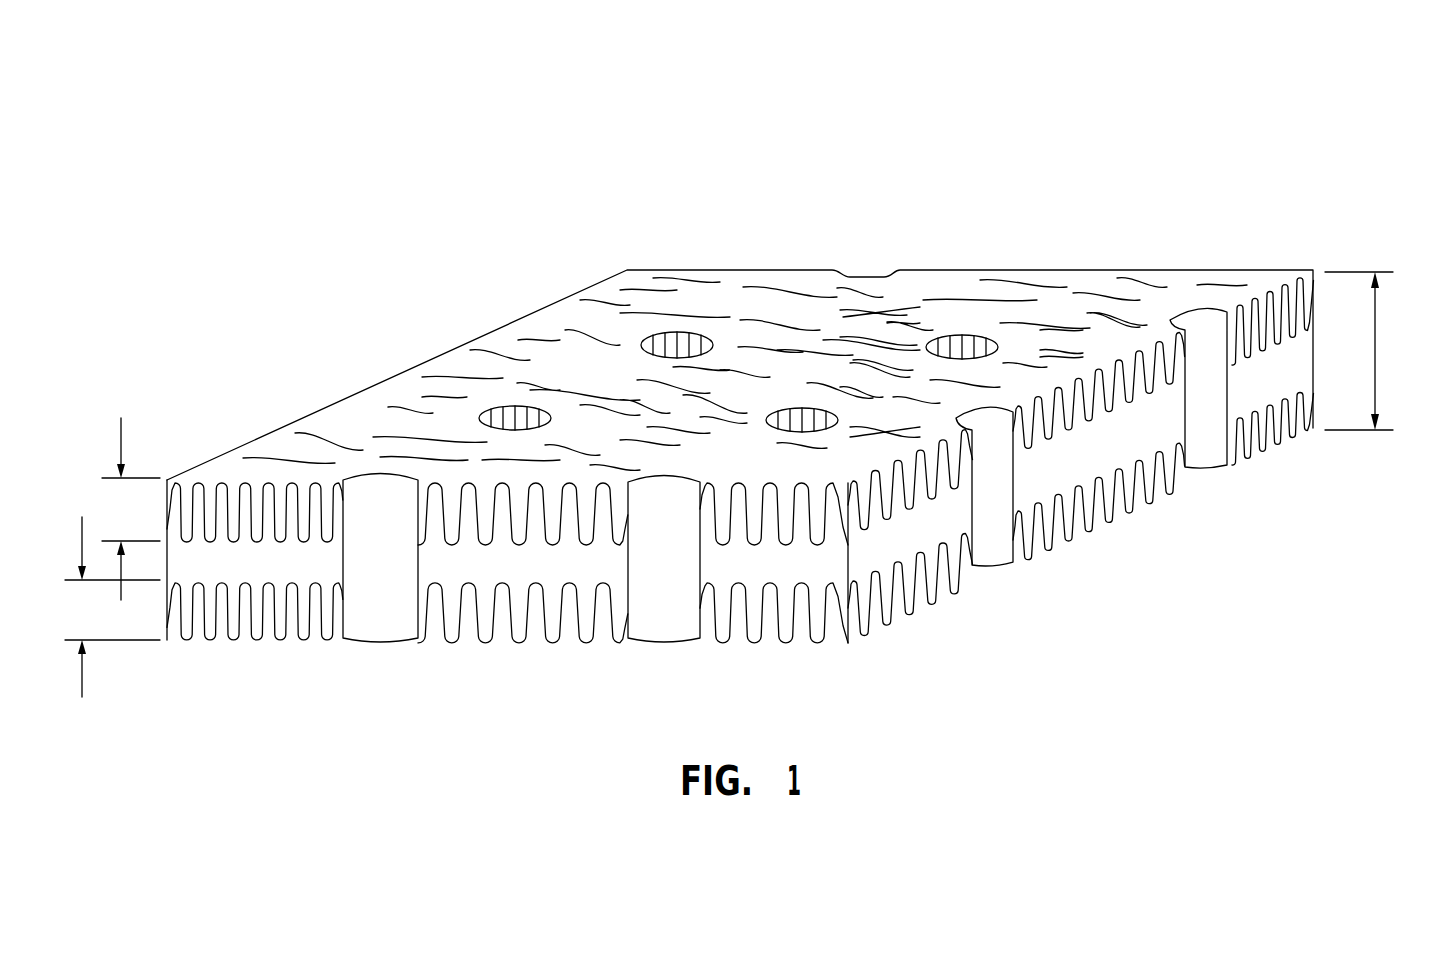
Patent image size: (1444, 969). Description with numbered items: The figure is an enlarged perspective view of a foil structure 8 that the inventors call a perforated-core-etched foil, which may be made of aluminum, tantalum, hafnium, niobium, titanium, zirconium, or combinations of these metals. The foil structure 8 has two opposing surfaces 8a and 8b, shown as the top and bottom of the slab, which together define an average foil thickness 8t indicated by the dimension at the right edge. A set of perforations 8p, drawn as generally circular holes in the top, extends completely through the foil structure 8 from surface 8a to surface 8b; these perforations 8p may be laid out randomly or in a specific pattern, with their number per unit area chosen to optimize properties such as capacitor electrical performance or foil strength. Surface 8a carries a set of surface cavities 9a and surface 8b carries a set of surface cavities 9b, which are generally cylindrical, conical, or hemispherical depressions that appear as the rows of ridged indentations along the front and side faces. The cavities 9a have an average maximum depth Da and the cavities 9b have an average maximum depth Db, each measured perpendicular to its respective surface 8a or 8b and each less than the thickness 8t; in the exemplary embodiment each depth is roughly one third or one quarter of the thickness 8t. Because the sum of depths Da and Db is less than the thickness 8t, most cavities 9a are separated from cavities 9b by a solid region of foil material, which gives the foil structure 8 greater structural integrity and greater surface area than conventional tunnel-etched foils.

The foil structure 8 is at (740, 380).
The surface 8a is at (497, 345).
The surface 8b is at (533, 630).
The perforations 8p is at (858, 277).
The surface cavities 9a is at (1128, 357).
The surface cavities 9b is at (1117, 508).
The average foil thickness 8t is at (1380, 350).
The average maximum depth Da is at (120, 436).
The average maximum depth Db is at (84, 680).